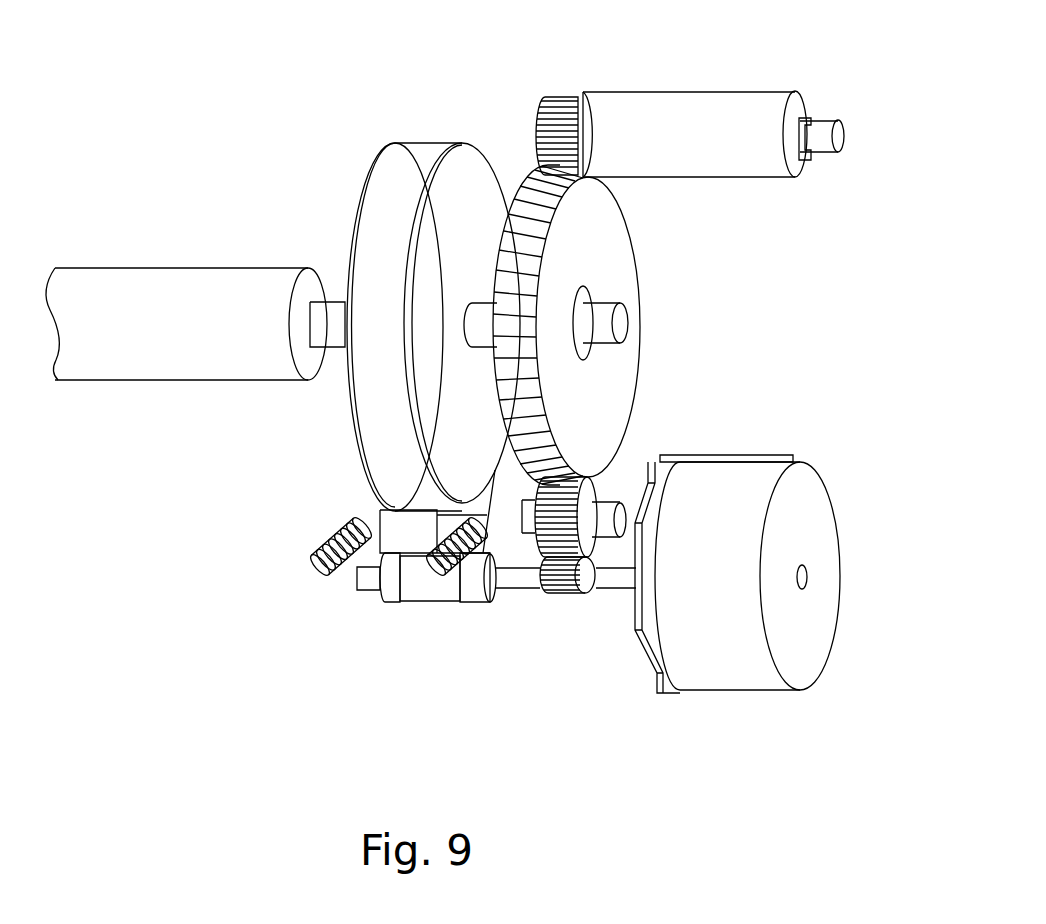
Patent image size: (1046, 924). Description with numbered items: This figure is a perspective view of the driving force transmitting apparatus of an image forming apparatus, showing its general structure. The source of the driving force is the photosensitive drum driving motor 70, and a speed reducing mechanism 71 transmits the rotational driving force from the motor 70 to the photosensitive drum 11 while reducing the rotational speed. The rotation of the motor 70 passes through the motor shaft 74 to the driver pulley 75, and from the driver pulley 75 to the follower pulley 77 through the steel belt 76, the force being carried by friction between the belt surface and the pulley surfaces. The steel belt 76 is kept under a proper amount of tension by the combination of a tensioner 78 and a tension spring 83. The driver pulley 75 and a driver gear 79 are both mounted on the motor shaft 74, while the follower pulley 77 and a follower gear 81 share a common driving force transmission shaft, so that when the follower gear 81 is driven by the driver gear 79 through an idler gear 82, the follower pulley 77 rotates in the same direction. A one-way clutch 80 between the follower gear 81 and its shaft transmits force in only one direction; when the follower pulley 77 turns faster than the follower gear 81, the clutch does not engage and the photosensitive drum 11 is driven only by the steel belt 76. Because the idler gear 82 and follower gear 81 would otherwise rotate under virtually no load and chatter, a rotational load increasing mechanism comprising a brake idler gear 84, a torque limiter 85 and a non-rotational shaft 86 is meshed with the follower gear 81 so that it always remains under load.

The photosensitive drum 11 is at (150, 365).
The photosensitive drum driving motor 70 is at (722, 655).
The speed reducing mechanism 71 is at (434, 124).
The motor shaft 74 is at (617, 590).
The driver pulley 75 is at (358, 572).
The steel belt 76 is at (372, 178).
The follower pulley 77 is at (397, 287).
The tensioner 78 is at (380, 512).
The driver gear 79 is at (560, 596).
The one-way clutch 80 is at (603, 290).
The follower gear 81 is at (600, 235).
The idler gear 82 is at (625, 475).
The tension spring 83 is at (308, 553).
The brake idler gear 84 is at (555, 97).
The torque limiter 85 is at (672, 98).
The non-rotational shaft 86 is at (820, 120).